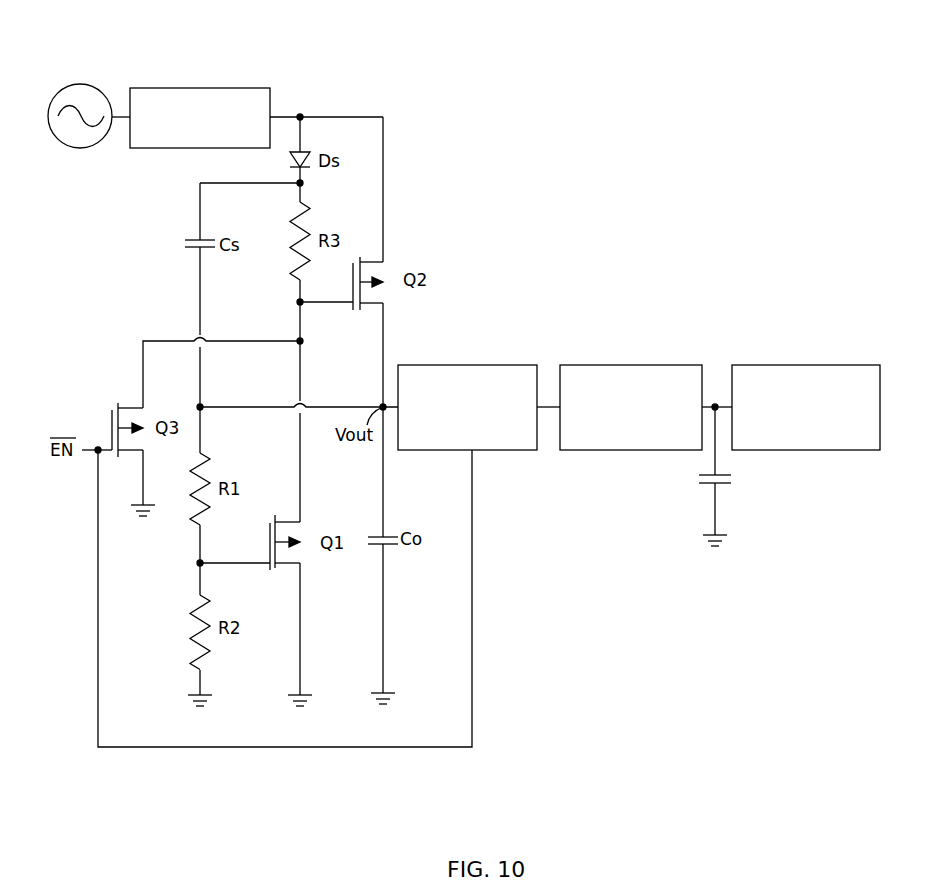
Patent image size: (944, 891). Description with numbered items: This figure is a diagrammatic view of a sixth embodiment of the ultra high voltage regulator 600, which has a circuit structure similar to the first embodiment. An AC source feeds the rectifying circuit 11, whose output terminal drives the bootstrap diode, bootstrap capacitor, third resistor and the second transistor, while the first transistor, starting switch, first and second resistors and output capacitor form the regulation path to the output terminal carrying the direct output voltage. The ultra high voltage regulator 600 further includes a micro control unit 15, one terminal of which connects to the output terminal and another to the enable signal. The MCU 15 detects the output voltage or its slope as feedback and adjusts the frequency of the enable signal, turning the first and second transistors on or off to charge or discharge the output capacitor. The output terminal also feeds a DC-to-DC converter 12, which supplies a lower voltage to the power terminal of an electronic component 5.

The ultra high voltage regulator 600 is at (528, 42).
The rectifying circuit 11 is at (195, 88).
The micro control unit 15 is at (460, 365).
The DC-to-DC converter 12 is at (632, 365).
The electronic component 5 is at (765, 365).